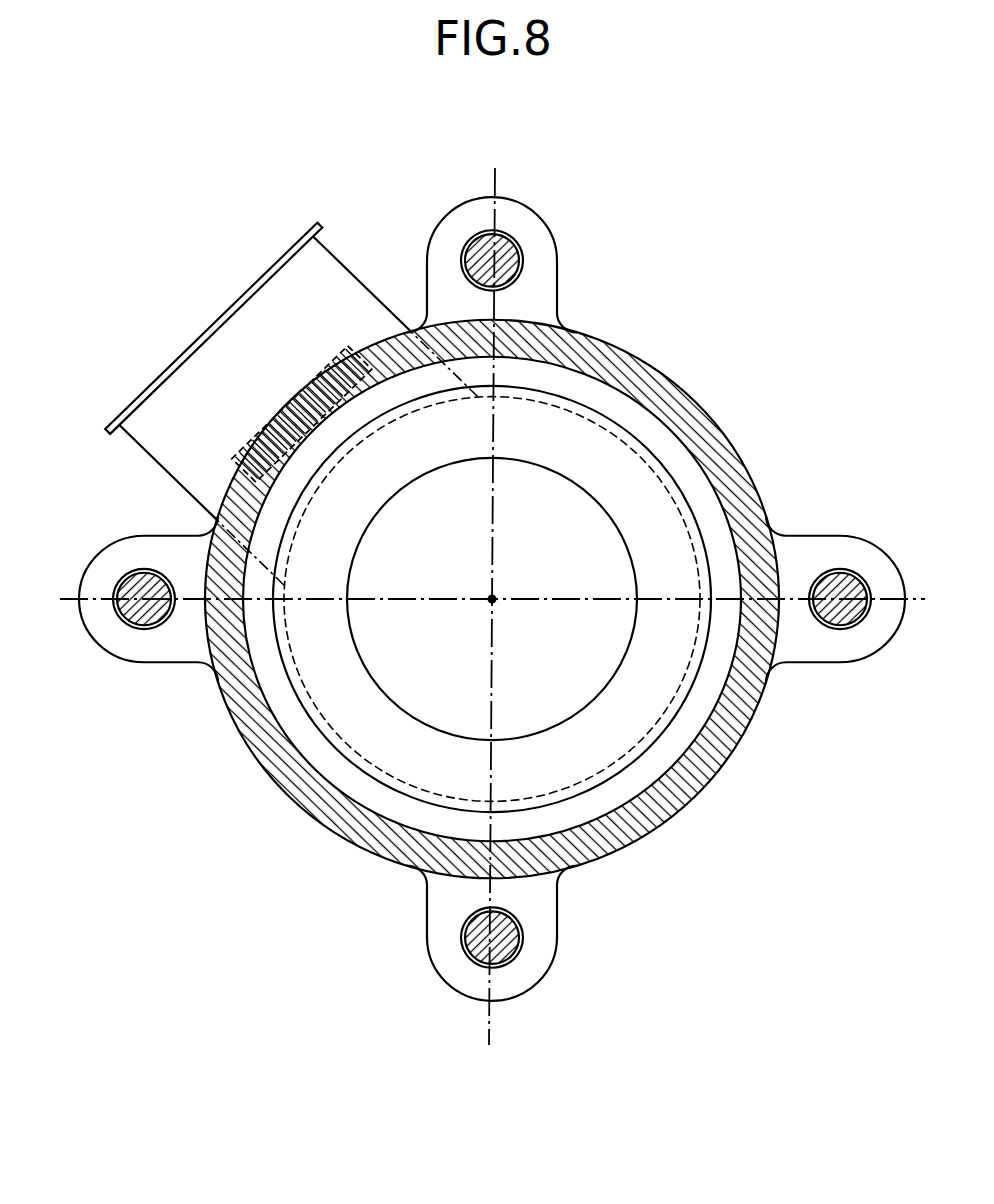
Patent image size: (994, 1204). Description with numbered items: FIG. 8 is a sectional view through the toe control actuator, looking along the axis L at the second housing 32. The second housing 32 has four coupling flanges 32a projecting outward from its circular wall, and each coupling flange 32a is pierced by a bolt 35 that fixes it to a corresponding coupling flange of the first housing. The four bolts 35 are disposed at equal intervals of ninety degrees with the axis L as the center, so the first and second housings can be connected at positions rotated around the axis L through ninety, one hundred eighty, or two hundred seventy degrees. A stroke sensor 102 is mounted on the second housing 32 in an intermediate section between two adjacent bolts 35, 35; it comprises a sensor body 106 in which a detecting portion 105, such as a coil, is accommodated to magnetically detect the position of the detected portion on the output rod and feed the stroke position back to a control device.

The second housing 32 is at (714, 399).
The coupling flanges 32a is at (450, 228).
The bolts 35 is at (523, 249).
The stroke sensor 102 is at (279, 224).
The detecting portion 105 is at (295, 395).
The sensor body 106 is at (250, 307).
The axis L is at (494, 598).